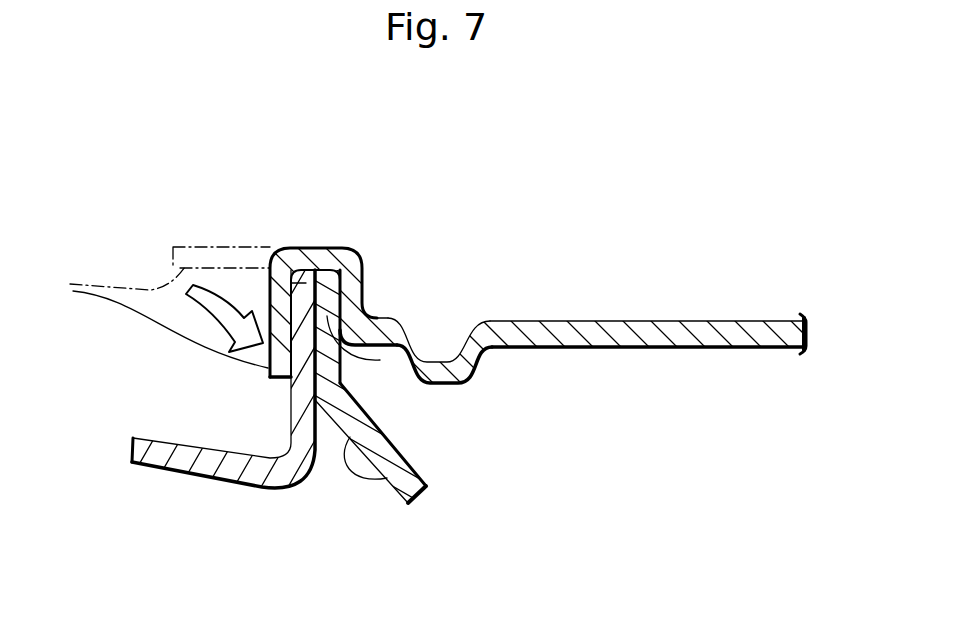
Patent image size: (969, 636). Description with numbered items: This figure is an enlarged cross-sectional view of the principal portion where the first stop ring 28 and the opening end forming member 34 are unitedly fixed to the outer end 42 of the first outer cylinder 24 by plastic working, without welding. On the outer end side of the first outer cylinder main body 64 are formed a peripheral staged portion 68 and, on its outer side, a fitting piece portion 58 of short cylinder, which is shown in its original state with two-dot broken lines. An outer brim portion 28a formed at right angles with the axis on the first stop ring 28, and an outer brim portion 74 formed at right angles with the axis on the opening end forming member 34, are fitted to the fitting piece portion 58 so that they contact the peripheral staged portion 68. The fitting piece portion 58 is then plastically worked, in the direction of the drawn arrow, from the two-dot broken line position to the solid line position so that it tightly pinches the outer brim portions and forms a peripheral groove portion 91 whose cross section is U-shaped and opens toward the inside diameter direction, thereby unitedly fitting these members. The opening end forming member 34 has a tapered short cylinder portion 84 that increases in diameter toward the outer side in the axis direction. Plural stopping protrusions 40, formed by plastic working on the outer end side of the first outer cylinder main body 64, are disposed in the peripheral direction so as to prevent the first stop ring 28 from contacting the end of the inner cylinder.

The first outer cylinder 24 is at (586, 322).
The first stop ring 28 is at (393, 490).
The outer brim portion 28a is at (360, 263).
The opening end forming member 34 is at (233, 490).
The stopping protrusions 40 is at (455, 373).
The outer end 42 is at (338, 247).
The fitting piece portion 58 is at (151, 307).
The first outer cylinder main body 64 is at (695, 322).
The peripheral staged portion 68 is at (363, 357).
The outer brim portion 74 is at (305, 283).
The tapered short cylinder portion 84 is at (163, 453).
The peripheral groove portion 91 is at (326, 247).